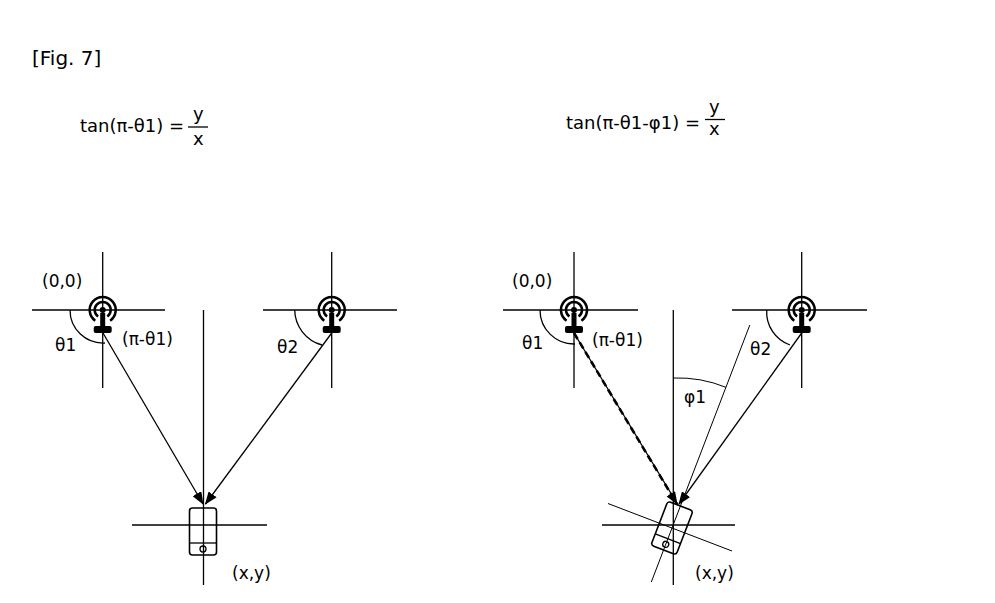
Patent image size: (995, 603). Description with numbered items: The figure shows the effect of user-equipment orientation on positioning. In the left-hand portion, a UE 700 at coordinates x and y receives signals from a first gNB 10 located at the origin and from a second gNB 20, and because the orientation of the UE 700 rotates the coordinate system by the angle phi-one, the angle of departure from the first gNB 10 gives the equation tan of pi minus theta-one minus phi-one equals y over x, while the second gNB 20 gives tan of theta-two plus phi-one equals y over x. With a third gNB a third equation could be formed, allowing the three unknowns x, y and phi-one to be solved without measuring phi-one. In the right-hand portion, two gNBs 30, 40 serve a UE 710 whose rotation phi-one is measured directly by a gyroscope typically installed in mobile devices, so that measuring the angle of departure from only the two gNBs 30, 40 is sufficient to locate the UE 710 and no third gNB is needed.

The first gNB 10 is at (133, 290).
The second gNB 20 is at (355, 290).
The gNB 30 is at (595, 288).
The gNB 40 is at (820, 288).
The UE 700 is at (233, 517).
The UE 710 is at (707, 515).